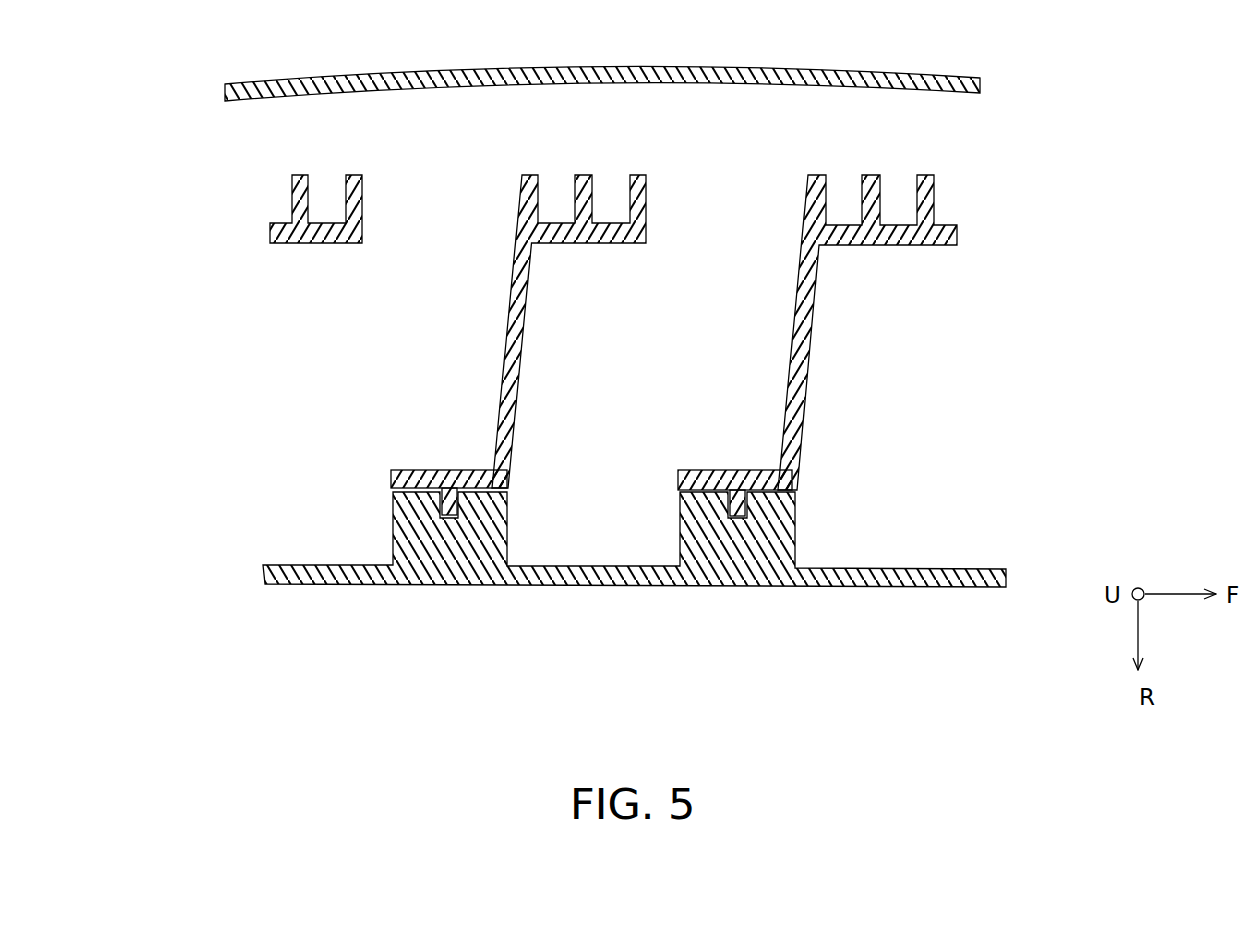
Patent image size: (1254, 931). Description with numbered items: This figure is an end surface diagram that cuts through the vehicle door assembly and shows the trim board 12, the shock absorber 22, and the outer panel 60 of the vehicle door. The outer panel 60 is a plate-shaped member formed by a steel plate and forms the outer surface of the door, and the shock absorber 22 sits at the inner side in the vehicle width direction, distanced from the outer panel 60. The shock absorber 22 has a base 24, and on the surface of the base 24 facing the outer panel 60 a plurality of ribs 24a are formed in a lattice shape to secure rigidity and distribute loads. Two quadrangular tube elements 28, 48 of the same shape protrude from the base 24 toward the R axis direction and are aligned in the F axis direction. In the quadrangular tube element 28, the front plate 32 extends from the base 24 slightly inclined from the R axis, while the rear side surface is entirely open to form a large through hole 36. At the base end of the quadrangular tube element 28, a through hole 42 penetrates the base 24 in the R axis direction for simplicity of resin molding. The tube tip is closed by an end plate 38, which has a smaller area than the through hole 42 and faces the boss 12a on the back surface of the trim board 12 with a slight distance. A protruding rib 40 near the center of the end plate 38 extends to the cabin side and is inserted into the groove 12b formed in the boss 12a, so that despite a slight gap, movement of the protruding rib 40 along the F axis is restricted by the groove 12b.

The trim board 12 is at (1010, 580).
The boss 12a is at (510, 547).
The groove 12b is at (455, 525).
The shock absorber 22 is at (1049, 304).
The base 24 is at (270, 233).
The ribs 24a is at (292, 190).
The quadrangular tube element 28 is at (509, 323).
The front plate 32 is at (506, 360).
The through hole 36 is at (382, 395).
The end plate 38 is at (390, 473).
The protruding rib 40 is at (455, 470).
The through hole 42 is at (435, 229).
The quadrangular tube element 48 is at (812, 368).
The outer panel 60 is at (983, 83).